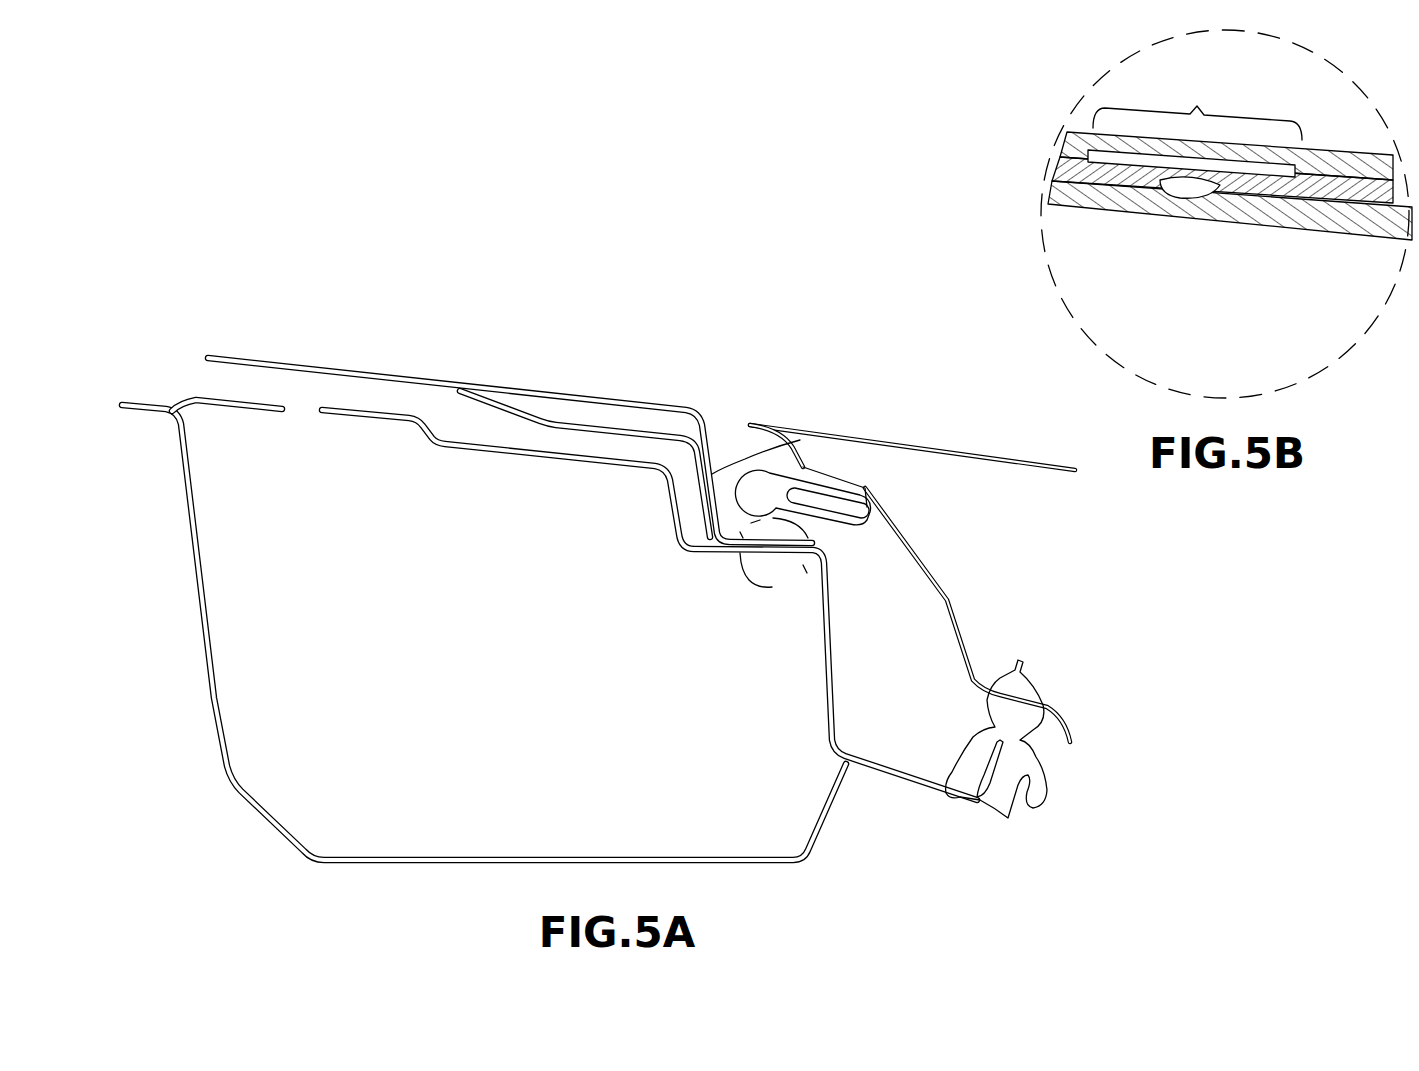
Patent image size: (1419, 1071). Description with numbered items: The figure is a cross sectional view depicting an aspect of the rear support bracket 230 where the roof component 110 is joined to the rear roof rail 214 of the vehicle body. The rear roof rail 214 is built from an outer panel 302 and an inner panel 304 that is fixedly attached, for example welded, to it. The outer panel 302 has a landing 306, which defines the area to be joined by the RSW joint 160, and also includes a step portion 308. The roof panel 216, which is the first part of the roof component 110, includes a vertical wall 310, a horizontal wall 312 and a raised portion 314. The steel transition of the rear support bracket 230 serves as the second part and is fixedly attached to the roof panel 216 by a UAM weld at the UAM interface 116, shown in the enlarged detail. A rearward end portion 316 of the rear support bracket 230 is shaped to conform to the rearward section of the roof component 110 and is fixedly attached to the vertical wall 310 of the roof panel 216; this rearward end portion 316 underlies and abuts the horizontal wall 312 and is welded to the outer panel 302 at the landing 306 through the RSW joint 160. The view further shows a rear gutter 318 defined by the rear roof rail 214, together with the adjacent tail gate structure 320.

In FIG. 5A, the roof component 110 is at (158, 318).
In FIG. 5B, the UAM interface 116 is at (1195, 125).
In FIG. 5B, the RSW joint 160 is at (1192, 195).
In FIG. 5A, the rear roof rail 214 is at (245, 838).
In FIG. 5A, the roof panel 216 is at (350, 372).
In FIG. 5B, the roof panel 216 is at (1080, 140).
In FIG. 5A, the rear support bracket 230 is at (570, 422).
In FIG. 5B, the rear support bracket 230 is at (1068, 168).
In FIG. 5A, the outer panel 302 is at (362, 425).
In FIG. 5B, the outer panel 302 is at (1060, 190).
In FIG. 5A, the inner panel 304 is at (390, 856).
In FIG. 5A, the landing 306 is at (715, 552).
In FIG. 5A, the step portion 308 is at (668, 492).
In FIG. 5A, the vertical wall 310 is at (801, 440).
In FIG. 5A, the horizontal wall 312 is at (812, 538).
In FIG. 5A, the raised portion 314 is at (482, 385).
In FIG. 5A, the rearward end portion 316 is at (686, 541).
In FIG. 5A, the rear gutter 318 is at (880, 790).
In FIG. 5A, the tail gate structure 320 is at (1085, 670).